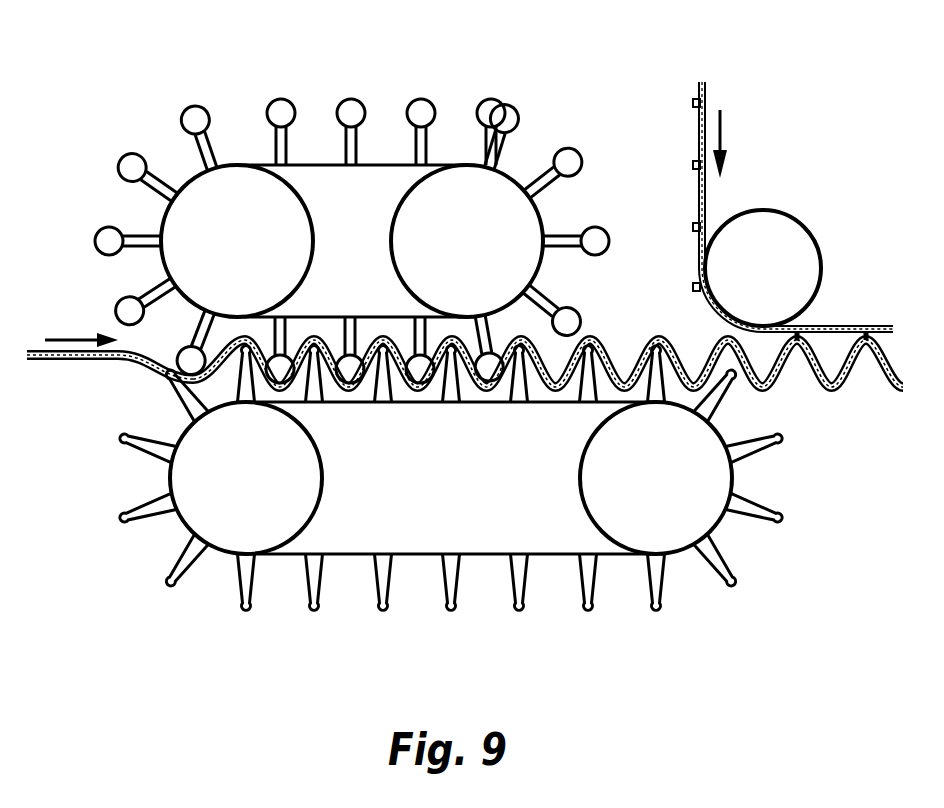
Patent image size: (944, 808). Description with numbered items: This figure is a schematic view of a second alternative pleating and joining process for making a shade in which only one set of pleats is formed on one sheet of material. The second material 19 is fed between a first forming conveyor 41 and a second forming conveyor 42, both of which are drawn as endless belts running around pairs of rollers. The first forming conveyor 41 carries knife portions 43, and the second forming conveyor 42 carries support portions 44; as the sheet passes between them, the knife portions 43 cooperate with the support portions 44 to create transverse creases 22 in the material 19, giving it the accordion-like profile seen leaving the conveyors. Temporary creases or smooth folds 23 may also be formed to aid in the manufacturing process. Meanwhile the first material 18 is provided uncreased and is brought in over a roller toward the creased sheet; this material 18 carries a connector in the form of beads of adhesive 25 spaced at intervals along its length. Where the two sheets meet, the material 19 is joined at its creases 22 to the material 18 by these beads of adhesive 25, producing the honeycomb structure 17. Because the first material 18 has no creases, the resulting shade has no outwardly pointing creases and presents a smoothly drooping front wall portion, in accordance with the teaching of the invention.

The honeycomb structure 17 is at (838, 366).
The first material 18 is at (708, 108).
The second material 19 is at (131, 362).
The transverse creases 22 is at (592, 338).
The temporary creases or smooth folds 23 is at (826, 392).
The beads of adhesive 25 is at (694, 167).
The first forming conveyor 41 is at (435, 478).
The second forming conveyor 42 is at (339, 241).
The knife portions 43 is at (143, 456).
The support portions 44 is at (150, 288).